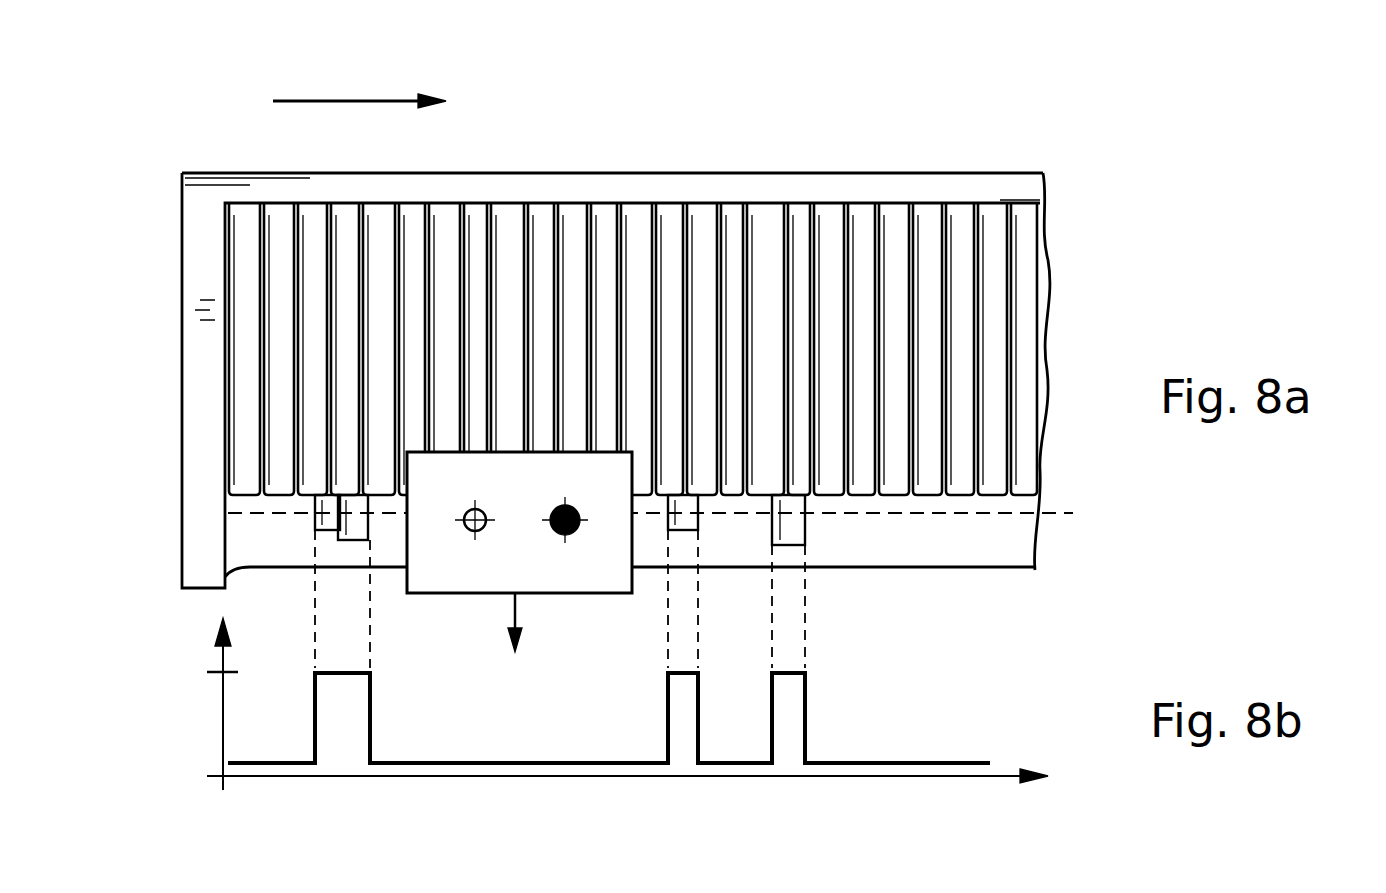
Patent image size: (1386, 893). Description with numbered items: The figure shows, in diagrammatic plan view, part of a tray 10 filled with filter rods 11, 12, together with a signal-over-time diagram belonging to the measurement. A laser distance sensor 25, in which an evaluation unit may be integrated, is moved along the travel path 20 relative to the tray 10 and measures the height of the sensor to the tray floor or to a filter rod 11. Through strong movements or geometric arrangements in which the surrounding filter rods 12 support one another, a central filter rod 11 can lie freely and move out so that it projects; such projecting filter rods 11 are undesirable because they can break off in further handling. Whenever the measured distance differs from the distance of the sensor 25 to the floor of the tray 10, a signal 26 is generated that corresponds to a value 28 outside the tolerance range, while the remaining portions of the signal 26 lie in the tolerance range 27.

In FIG. 8A, the tray 10 is at (667, 190).
In FIG. 8A, the filter rod 11 is at (807, 530).
In FIG. 8A, the filter rod 12 is at (803, 240).
In FIG. 8A, the travel path 20 is at (357, 100).
In FIG. 8A, the laser distance sensor 25 is at (472, 563).
In FIG. 8A, the signal 26 is at (515, 612).
In FIG. 8B, the in the tolerance range 27 is at (221, 774).
In FIG. 8B, the value 28 is at (221, 671).